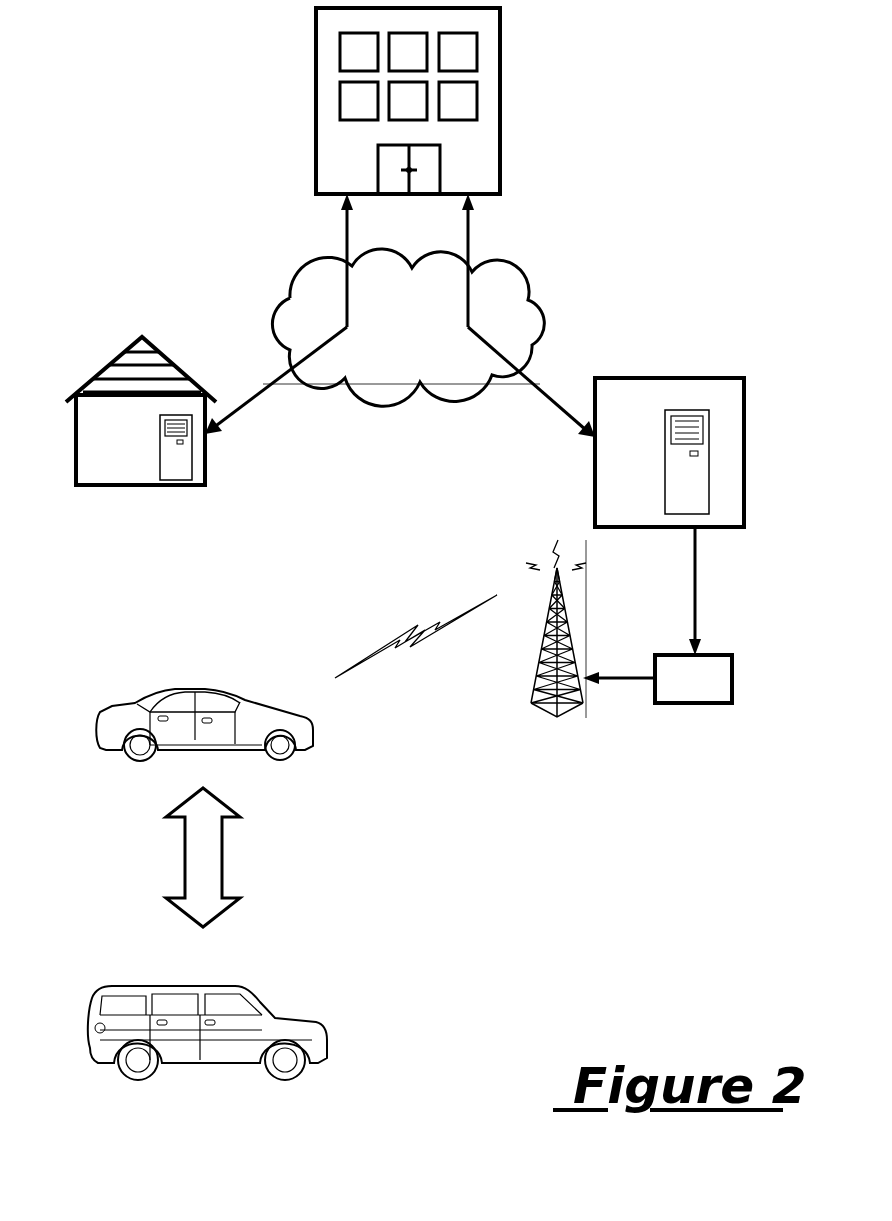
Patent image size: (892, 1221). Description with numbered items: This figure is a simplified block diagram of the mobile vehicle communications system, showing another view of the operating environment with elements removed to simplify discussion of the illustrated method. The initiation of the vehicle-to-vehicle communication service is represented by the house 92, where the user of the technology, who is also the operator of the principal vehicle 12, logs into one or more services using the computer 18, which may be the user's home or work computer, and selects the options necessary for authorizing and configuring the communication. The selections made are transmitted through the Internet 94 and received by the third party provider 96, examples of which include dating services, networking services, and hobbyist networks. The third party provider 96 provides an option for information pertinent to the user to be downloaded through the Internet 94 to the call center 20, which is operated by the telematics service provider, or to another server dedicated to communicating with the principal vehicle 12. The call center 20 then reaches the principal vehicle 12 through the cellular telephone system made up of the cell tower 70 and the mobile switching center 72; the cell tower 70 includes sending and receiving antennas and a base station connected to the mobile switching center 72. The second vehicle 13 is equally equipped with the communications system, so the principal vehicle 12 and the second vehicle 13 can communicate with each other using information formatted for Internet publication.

The principal vehicle 12 is at (100, 730).
The second vehicle 13 is at (125, 985).
The computer 18 is at (190, 460).
The call center 20 is at (745, 452).
The cell tower 70 is at (565, 605).
The mobile switching center 72 is at (732, 676).
The house 92 is at (107, 368).
The Internet 94 is at (527, 280).
The third party provider 96 is at (503, 90).